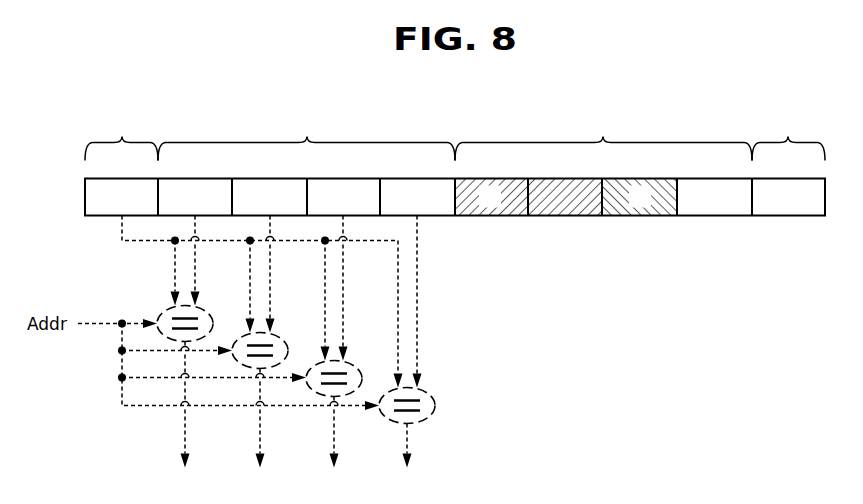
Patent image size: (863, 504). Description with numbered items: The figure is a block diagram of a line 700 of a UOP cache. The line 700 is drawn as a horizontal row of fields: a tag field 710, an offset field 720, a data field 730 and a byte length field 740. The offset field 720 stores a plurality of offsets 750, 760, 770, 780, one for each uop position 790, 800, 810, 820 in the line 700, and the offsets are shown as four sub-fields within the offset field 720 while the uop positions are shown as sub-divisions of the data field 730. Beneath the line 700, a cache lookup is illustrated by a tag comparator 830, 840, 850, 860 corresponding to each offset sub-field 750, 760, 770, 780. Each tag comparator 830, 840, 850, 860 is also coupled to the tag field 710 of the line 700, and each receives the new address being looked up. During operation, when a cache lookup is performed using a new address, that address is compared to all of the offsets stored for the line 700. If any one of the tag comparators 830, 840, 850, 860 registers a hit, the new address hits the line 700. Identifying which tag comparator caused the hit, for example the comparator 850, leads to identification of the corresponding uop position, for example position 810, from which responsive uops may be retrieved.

The line 700 is at (433, 84).
The tag field 710 is at (122, 136).
The offset field 720 is at (307, 136).
The data field 730 is at (603, 136).
The byte length field 740 is at (788, 136).
The offset 750 is at (178, 206).
The offset 760 is at (253, 206).
The offset 770 is at (326, 206).
The offset 780 is at (400, 206).
The uop position 790 is at (493, 217).
The uop position 800 is at (568, 217).
The uop position 810 is at (642, 217).
The uop position 820 is at (717, 217).
The tag comparator 830 is at (214, 319).
The tag comparator 840 is at (289, 352).
The tag comparator 850 is at (362, 379).
The tag comparator 860 is at (438, 406).